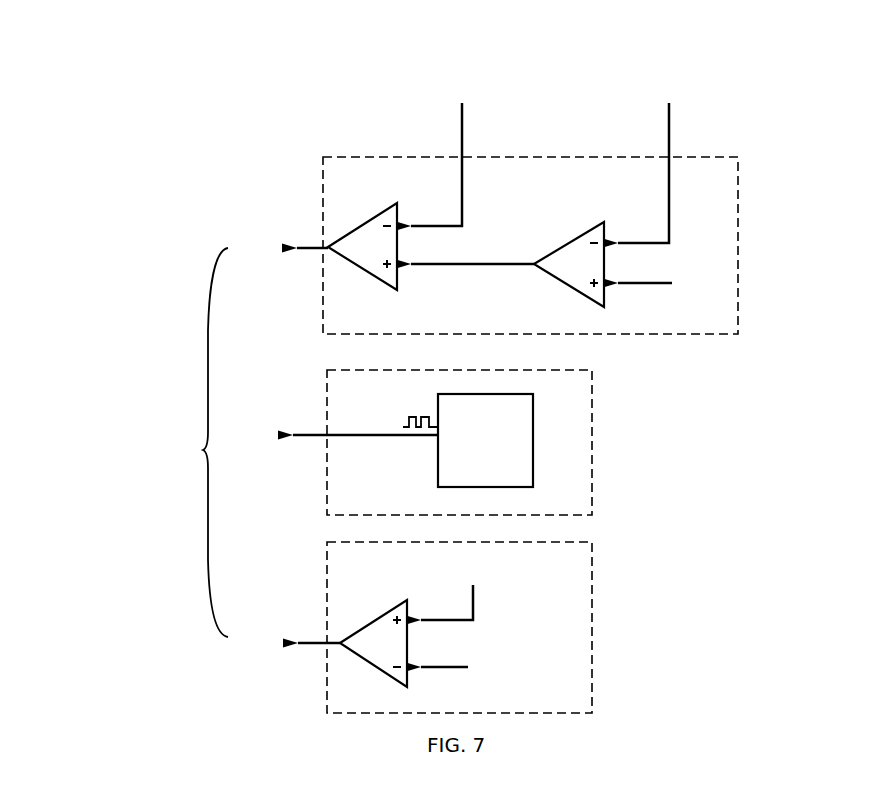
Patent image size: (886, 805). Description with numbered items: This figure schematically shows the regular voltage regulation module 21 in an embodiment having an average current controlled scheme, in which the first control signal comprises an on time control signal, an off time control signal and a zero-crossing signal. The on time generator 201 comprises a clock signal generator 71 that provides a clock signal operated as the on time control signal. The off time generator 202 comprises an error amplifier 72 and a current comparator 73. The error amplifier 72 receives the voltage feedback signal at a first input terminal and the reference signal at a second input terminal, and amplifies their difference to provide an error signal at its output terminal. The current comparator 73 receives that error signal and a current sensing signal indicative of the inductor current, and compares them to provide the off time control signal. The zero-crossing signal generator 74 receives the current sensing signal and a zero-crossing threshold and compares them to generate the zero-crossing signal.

The regular voltage regulation module 21 is at (732, 63).
The off time generator 202 is at (738, 191).
The current comparator 73 is at (374, 218).
The error amplifier 72 is at (579, 238).
The on time generator 201 is at (592, 422).
The clock signal generator 71 is at (533, 462).
The zero-crossing signal generator 74 is at (592, 593).